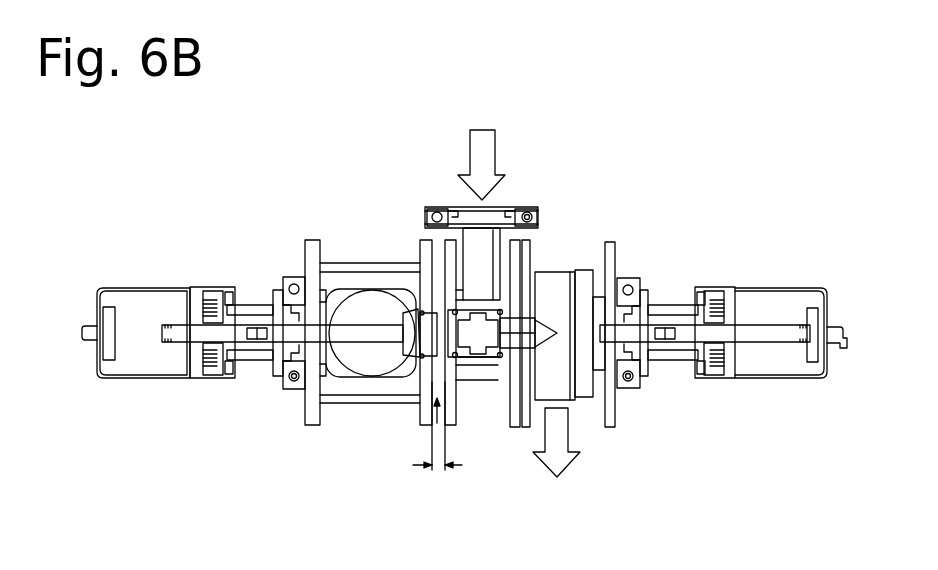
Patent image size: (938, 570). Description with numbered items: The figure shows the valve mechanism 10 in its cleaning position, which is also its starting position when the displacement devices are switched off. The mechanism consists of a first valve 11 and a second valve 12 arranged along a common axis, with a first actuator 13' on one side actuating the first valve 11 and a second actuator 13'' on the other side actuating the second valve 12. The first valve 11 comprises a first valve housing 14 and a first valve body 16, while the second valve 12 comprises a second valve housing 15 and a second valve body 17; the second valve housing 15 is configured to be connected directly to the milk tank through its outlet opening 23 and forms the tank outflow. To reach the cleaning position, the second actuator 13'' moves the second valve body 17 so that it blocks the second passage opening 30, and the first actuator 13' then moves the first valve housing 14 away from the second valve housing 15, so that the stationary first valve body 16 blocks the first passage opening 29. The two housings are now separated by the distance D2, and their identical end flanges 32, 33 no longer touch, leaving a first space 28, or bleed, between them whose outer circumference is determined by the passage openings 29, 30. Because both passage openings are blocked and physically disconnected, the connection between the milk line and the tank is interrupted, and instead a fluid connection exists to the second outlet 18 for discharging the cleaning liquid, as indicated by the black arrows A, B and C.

The valve mechanism 10 is at (246, 238).
The first valve 11 is at (503, 233).
The second valve 12 is at (337, 262).
The first actuator 13' is at (771, 303).
The second actuator 13'' is at (158, 290).
The first valve housing 14 is at (484, 367).
The second valve housing 15 is at (372, 275).
The first valve body 16 is at (535, 290).
The second valve body 17 is at (363, 335).
The second outlet 18 is at (566, 385).
The outlet opening 23 is at (383, 305).
The first space 28 is at (437, 423).
The first passage opening 29 is at (480, 380).
The second passage opening 30 is at (420, 346).
The end flange 32 is at (422, 400).
The end flange 33 is at (449, 422).
The arrow A is at (474, 151).
The arrow B is at (553, 356).
The arrow C is at (555, 466).
The distance D2 is at (437, 479).